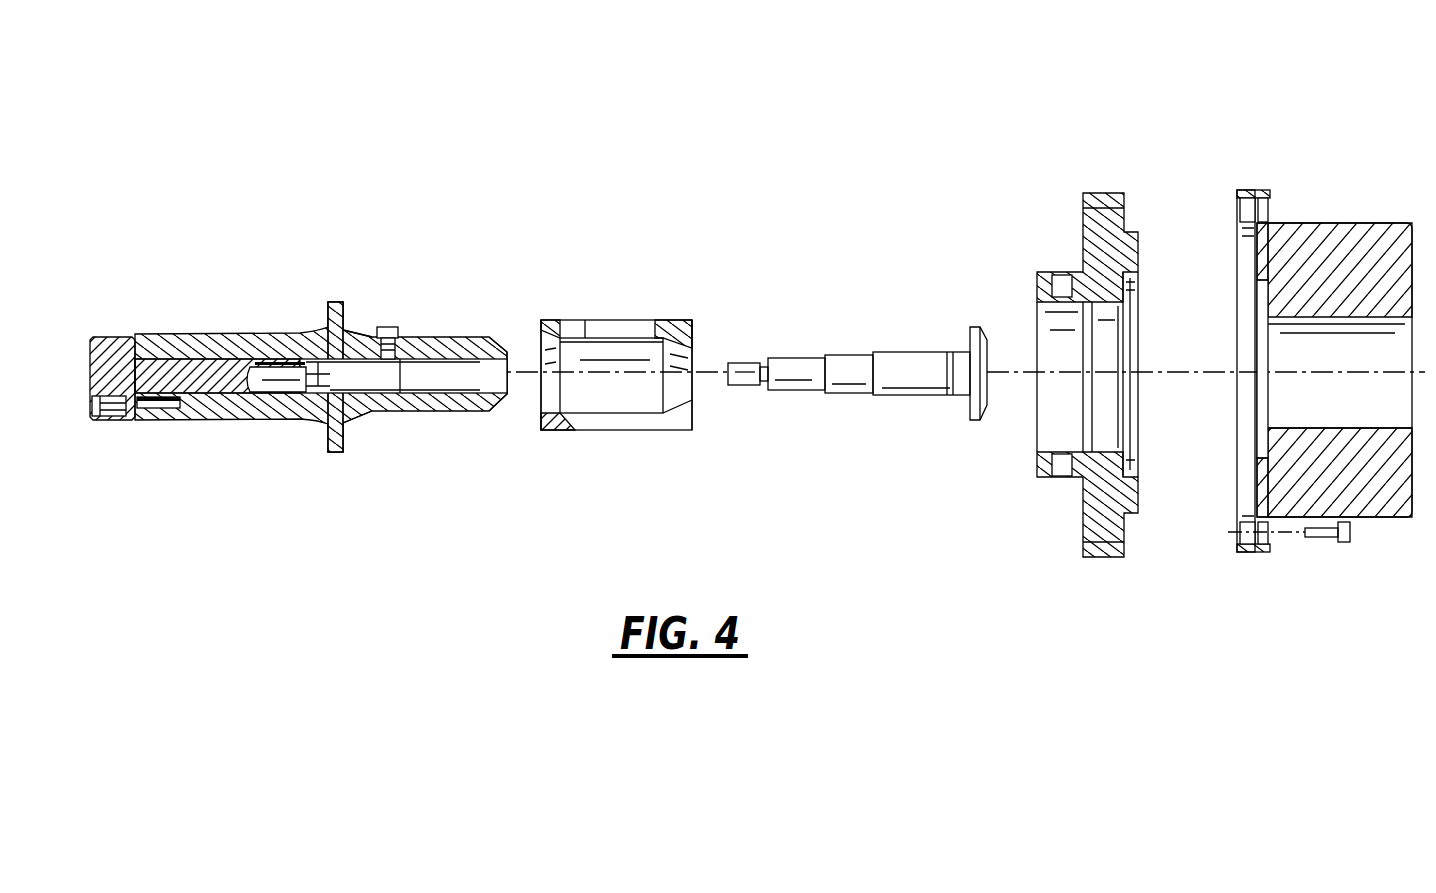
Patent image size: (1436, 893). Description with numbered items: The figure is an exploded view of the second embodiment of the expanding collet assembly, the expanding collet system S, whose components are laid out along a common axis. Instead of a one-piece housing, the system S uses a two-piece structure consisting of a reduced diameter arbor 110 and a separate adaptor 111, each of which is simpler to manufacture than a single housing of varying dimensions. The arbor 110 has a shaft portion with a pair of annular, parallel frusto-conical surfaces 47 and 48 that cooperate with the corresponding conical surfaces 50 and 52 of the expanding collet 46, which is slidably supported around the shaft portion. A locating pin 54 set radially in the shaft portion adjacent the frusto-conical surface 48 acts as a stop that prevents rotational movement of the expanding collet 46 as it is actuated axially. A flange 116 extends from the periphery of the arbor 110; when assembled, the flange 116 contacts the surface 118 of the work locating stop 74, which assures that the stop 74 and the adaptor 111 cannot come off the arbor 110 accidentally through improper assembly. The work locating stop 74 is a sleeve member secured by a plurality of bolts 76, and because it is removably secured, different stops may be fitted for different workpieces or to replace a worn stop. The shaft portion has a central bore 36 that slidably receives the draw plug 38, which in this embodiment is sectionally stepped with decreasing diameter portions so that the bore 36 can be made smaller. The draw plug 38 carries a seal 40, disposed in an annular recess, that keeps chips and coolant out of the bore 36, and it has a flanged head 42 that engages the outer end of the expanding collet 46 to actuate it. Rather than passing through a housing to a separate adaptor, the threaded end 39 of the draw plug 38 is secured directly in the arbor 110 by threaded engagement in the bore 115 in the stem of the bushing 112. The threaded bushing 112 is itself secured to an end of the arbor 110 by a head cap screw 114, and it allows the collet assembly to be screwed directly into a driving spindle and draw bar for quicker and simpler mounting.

The expanding collet system S is at (870, 114).
The arbor 110 is at (290, 302).
The threaded bushing 112 is at (119, 336).
The head cap screw 114 is at (99, 414).
The bore 115 is at (288, 356).
The flange 116 is at (329, 447).
The central bore 36 is at (430, 390).
The frusto-conical surface 47 is at (491, 418).
The frusto-conical surface 48 is at (365, 422).
The locating pin 54 is at (388, 327).
The expanding collet 46 is at (625, 306).
The frusto-conical surface 50 is at (689, 318).
The frusto-conical surface 52 is at (558, 318).
The draw plug 38 is at (845, 354).
The threaded end 39 is at (746, 362).
The seal 40 is at (946, 394).
The flanged head 42 is at (977, 418).
The adaptor 111 is at (1040, 322).
The surface 118 is at (1278, 294).
The work locating stop 74 is at (1236, 328).
The bolts 76 is at (1345, 545).